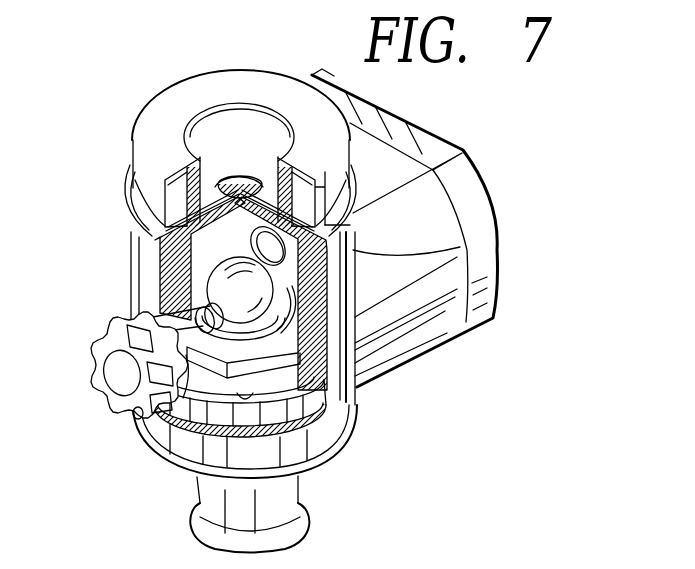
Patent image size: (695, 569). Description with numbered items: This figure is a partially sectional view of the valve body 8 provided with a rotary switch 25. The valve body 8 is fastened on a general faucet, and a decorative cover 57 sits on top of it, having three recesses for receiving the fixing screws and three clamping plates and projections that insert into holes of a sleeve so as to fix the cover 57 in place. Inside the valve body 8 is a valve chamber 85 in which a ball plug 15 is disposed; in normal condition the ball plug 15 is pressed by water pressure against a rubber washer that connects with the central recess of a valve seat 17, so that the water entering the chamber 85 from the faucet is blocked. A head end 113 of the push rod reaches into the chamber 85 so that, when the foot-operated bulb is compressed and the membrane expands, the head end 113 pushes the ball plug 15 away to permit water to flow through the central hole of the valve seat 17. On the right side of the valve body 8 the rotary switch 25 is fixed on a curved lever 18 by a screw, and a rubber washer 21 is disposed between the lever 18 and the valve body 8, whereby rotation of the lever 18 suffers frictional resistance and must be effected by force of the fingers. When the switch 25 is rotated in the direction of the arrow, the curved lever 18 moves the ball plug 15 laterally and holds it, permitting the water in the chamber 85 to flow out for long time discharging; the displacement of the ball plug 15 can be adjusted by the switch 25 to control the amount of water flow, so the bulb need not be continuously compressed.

The decorative cover 57 is at (262, 92).
The head end 113 is at (460, 247).
The valve chamber 85 is at (203, 251).
The ball plug 15 is at (228, 286).
The rubber washer 21 is at (131, 309).
The rotary switch 25 is at (93, 358).
The lever 18 is at (305, 320).
The valve seat 17 is at (290, 360).
The valve body 8 is at (284, 451).